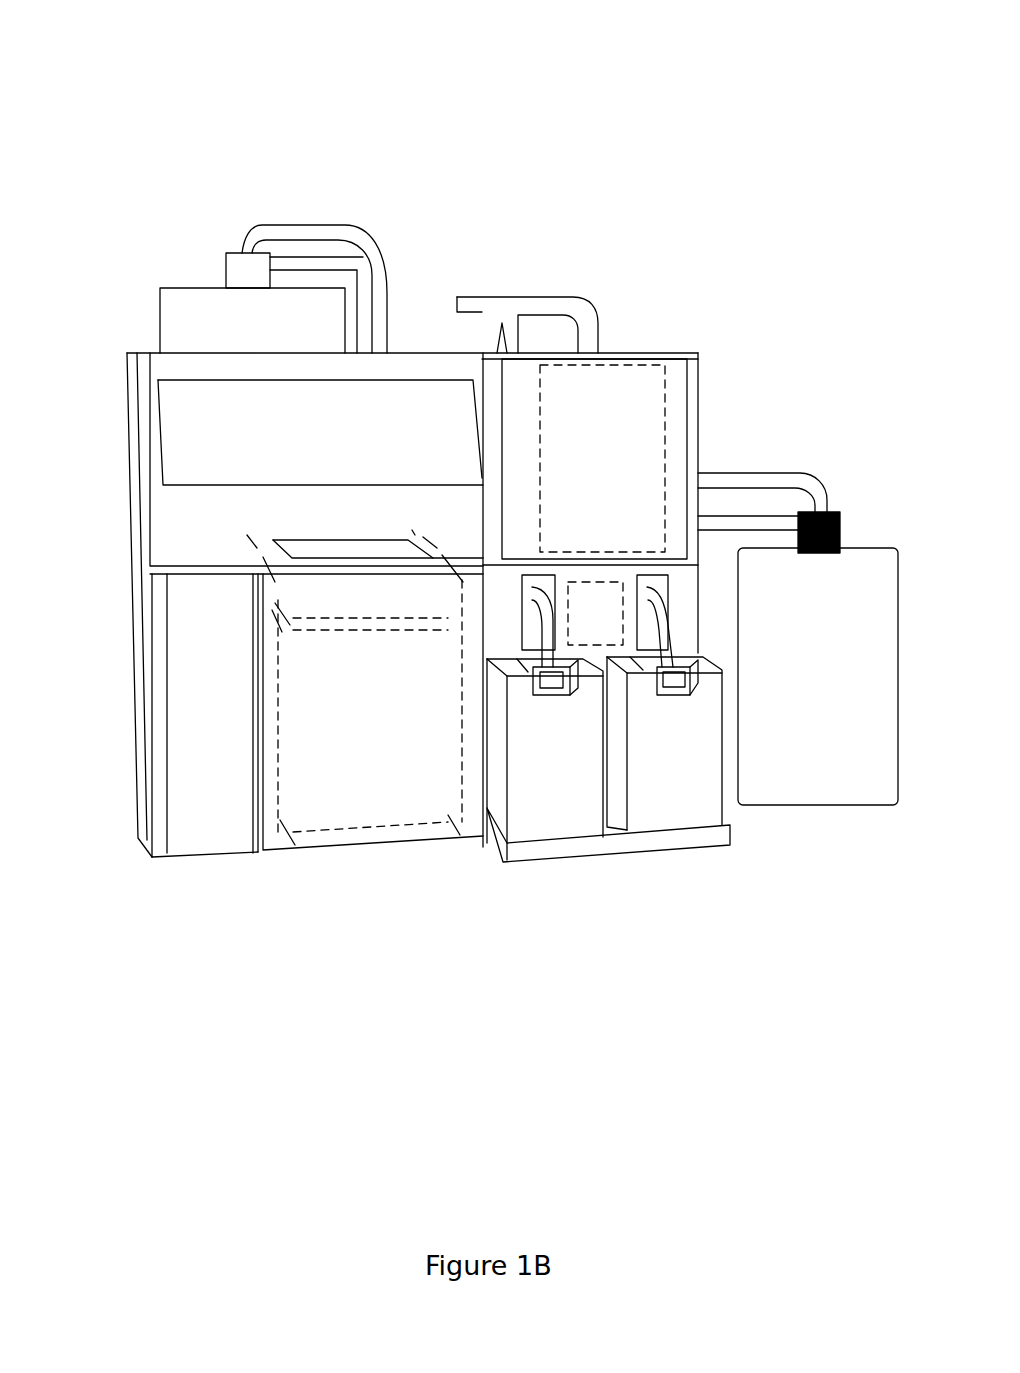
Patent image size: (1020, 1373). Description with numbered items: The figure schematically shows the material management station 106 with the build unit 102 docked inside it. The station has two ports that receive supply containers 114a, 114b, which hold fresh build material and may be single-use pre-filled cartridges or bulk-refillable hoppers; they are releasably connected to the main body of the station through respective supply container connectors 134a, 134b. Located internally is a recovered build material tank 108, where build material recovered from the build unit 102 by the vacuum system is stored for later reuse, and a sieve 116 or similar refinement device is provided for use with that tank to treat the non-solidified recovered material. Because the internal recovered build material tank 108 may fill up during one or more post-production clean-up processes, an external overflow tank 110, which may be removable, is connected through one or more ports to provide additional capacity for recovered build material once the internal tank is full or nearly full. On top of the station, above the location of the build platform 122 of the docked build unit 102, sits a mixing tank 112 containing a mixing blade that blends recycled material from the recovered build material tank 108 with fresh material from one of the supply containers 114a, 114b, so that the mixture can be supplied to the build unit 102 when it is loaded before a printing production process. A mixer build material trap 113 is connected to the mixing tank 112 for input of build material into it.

The material management station 106 is at (413, 110).
The build unit 102 is at (383, 800).
The recovered build material tank 108 is at (658, 362).
The external overflow tank 110 is at (862, 600).
The mixing tank 112 is at (193, 303).
The mixer build material trap 113 is at (243, 252).
The supply container 114a is at (553, 820).
The supply container 114b is at (683, 808).
The sieve 116 is at (602, 607).
The build platform 122 is at (373, 540).
The supply container connector 134a is at (562, 693).
The supply container connector 134b is at (687, 693).